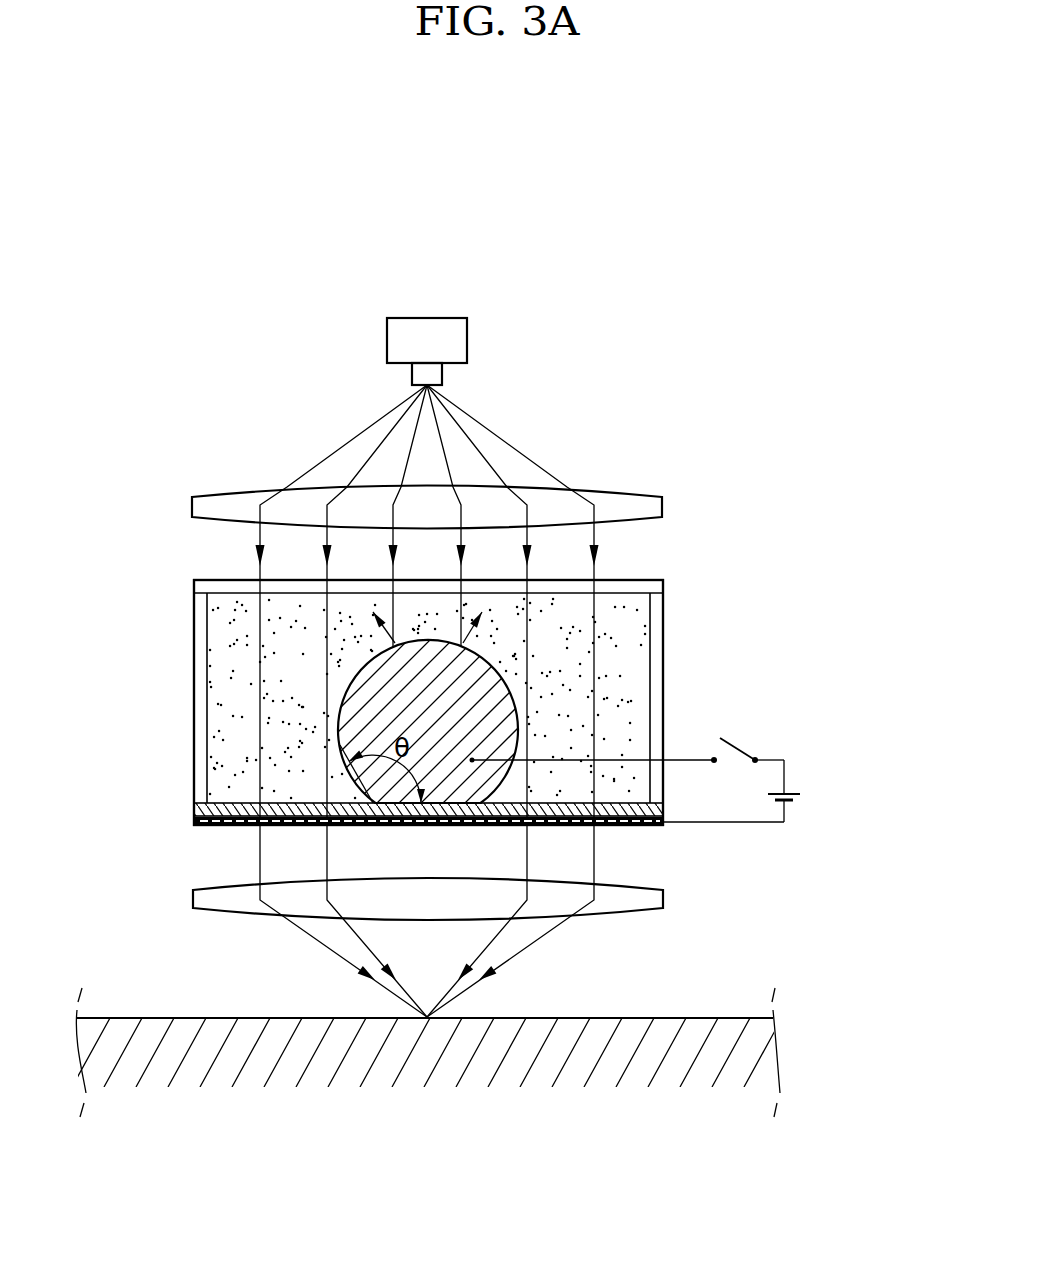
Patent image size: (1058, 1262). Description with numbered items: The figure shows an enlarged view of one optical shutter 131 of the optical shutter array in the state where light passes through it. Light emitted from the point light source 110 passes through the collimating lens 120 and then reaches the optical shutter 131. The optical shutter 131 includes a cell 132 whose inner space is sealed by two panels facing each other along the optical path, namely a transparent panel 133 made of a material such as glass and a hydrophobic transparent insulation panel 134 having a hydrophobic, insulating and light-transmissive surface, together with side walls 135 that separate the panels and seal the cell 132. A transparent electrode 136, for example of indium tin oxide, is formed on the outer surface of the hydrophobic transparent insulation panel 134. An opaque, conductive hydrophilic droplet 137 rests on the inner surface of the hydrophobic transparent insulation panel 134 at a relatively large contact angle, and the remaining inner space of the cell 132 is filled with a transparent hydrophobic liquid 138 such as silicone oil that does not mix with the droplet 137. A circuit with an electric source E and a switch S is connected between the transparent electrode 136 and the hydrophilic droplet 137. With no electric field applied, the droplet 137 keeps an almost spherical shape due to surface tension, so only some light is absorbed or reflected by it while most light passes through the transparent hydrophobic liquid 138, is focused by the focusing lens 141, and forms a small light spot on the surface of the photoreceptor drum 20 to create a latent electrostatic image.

The point light source 110 is at (467, 340).
The collimating lens 120 is at (641, 504).
The optical shutter 131 is at (800, 567).
The cell 132 is at (672, 694).
The transparent panel 133 is at (204, 588).
The hydrophobic transparent insulation panel 134 is at (195, 820).
The side walls 135 is at (202, 695).
The electrode 136 is at (218, 826).
The hydrophilic droplet 137 is at (365, 795).
The transparent hydrophobic liquid 138 is at (237, 635).
The focusing lens 141 is at (640, 900).
The photoreceptor drum 20 is at (663, 1052).
The switch S is at (754, 741).
The electric source E is at (807, 796).